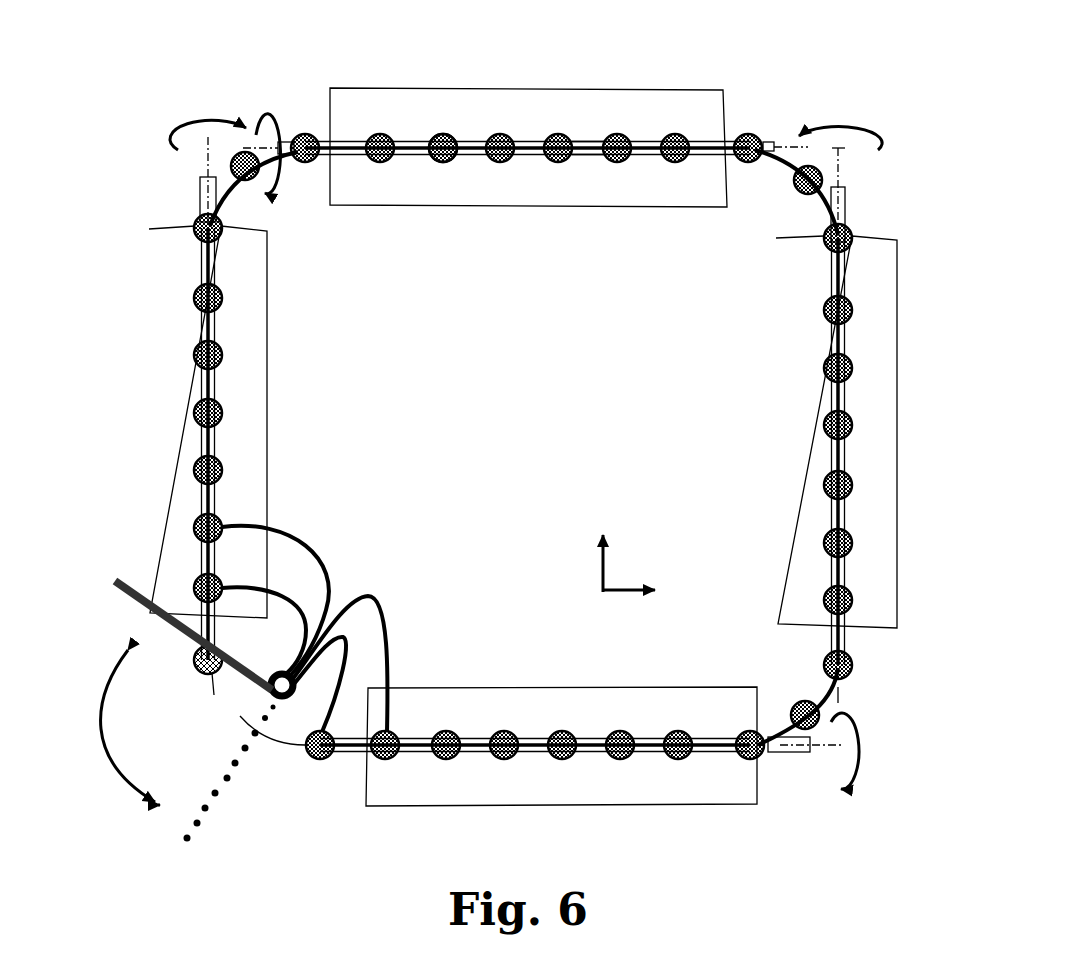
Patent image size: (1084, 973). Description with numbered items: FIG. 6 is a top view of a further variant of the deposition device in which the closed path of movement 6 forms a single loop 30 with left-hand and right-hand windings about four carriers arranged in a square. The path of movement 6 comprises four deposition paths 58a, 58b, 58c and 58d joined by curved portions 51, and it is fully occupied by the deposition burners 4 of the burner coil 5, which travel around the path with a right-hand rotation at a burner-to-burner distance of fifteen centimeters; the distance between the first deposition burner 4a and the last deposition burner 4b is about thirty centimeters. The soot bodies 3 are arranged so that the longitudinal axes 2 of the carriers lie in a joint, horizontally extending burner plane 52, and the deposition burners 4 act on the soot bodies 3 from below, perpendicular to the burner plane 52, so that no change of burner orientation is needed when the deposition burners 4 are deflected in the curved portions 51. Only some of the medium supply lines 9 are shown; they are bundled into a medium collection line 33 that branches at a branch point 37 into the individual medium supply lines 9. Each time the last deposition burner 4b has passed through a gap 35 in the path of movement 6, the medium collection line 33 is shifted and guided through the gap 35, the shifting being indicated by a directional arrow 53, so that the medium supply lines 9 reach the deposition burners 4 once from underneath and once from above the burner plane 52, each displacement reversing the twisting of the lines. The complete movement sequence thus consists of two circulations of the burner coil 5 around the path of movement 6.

The longitudinal axes 2 is at (210, 165).
The soot bodies 3 is at (236, 275).
The deposition burners 4 is at (218, 465).
The first deposition burner 4a is at (317, 758).
The last deposition burner 4b is at (200, 668).
The burner coil 5 is at (430, 124).
The path of movement 6 is at (587, 135).
The medium supply lines 9 is at (353, 600).
The single loop 30 is at (593, 156).
The medium collection line 33 is at (128, 600).
The gap 35 is at (222, 705).
The branch point 37 is at (273, 700).
The curved portions 51 is at (299, 128).
The burner plane 52 is at (620, 580).
The pivoting direction 53 is at (125, 782).
The deposition path 58a is at (203, 443).
The deposition path 58b is at (529, 146).
The deposition path 58c is at (835, 399).
The deposition path 58d is at (473, 740).